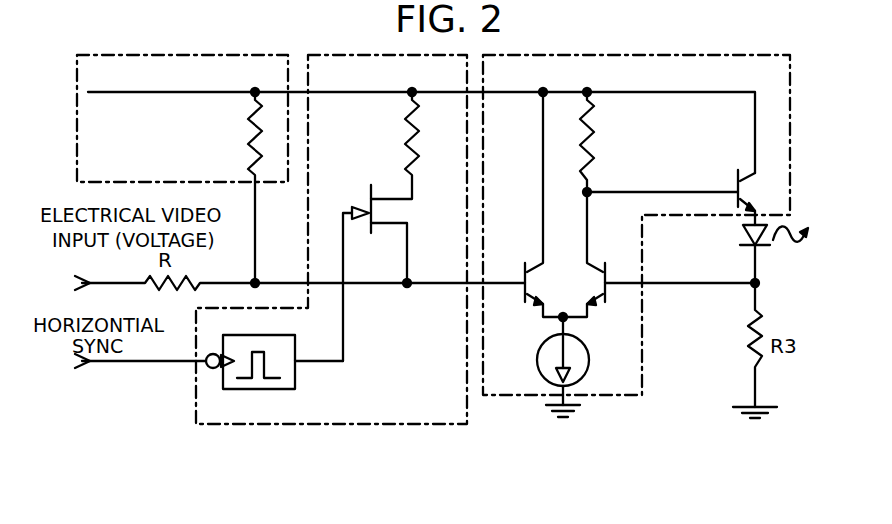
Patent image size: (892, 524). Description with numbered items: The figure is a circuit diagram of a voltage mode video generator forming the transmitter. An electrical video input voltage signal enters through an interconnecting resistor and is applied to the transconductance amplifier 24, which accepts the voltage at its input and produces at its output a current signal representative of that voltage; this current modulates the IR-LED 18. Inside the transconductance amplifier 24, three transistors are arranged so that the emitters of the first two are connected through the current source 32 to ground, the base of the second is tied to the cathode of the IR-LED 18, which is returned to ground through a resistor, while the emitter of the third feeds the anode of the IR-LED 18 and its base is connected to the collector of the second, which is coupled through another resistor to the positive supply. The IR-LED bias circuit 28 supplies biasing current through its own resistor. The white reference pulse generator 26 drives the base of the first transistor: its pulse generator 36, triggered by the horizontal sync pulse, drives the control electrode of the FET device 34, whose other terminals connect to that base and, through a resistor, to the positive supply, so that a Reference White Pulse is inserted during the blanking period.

The IR-LED 18 is at (787, 259).
The transconductance amplifier 24 is at (607, 397).
The white reference pulse generator 26 is at (332, 430).
The IR-LED bias circuit 28 is at (186, 50).
The current source 32 is at (609, 351).
The FET device 34 is at (375, 273).
The pulse generator 36 is at (297, 372).